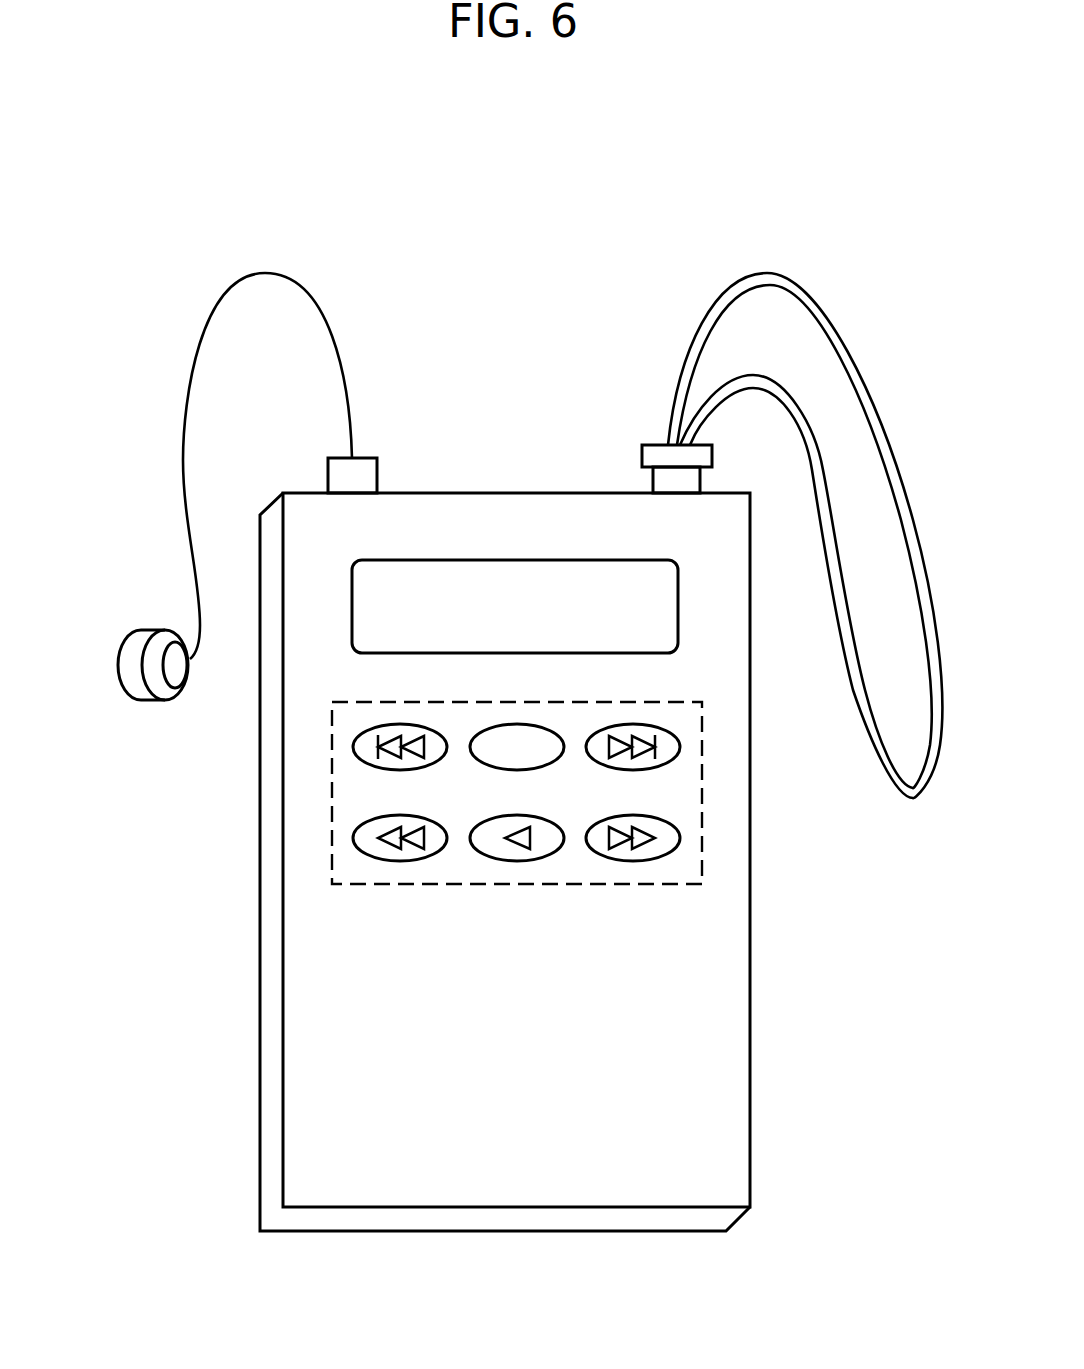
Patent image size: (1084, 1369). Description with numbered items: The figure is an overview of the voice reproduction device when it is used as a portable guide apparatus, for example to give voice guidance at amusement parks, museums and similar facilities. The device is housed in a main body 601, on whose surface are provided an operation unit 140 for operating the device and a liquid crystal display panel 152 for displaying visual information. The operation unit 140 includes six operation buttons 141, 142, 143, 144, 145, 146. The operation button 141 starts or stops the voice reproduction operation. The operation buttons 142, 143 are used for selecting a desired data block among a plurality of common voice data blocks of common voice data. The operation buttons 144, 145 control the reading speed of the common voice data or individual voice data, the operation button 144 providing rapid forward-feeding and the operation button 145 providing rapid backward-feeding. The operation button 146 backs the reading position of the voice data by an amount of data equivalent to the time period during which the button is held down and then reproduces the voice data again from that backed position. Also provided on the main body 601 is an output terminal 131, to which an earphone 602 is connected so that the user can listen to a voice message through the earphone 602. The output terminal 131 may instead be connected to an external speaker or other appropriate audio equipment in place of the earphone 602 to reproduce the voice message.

The output terminal 131 is at (378, 465).
The operation unit 140 is at (703, 746).
The operation button 141 is at (525, 726).
The operation button 142 is at (643, 726).
The operation button 143 is at (408, 724).
The operation button 144 is at (641, 861).
The operation button 145 is at (410, 861).
The operation button 146 is at (525, 861).
The liquid crystal display panel 152 is at (619, 559).
The main body 601 is at (260, 870).
The earphone 602 is at (143, 630).